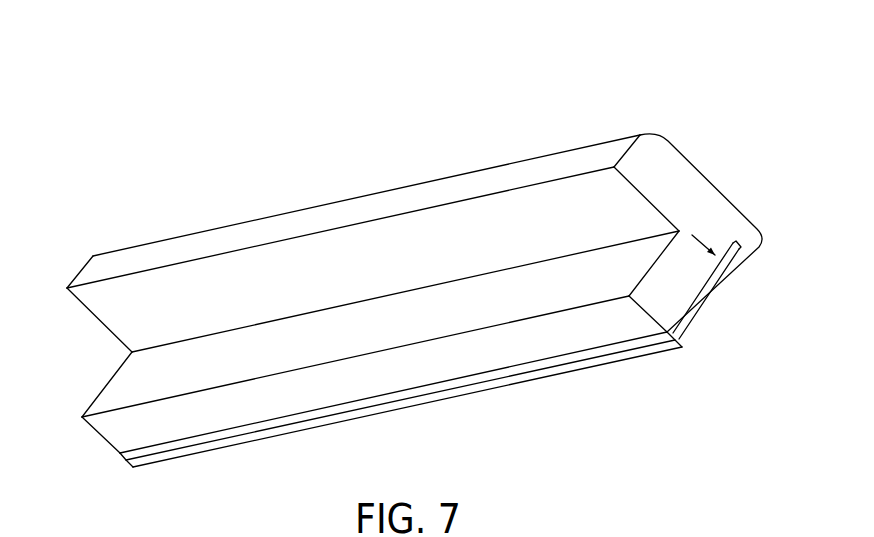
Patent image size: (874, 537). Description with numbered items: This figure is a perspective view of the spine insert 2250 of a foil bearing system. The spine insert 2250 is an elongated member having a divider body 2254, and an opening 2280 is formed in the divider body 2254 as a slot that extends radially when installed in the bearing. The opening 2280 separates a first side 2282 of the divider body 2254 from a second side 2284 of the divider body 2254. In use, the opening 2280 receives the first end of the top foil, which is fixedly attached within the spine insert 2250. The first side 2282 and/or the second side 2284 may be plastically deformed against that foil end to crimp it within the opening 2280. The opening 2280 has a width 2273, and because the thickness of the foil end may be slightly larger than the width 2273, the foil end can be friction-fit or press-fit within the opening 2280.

The spine insert 2250 is at (240, 117).
The divider body 2254 is at (115, 393).
The width 2273 is at (728, 267).
The opening 2280 is at (682, 322).
The first side 2282 is at (565, 365).
The second side 2284 is at (448, 367).